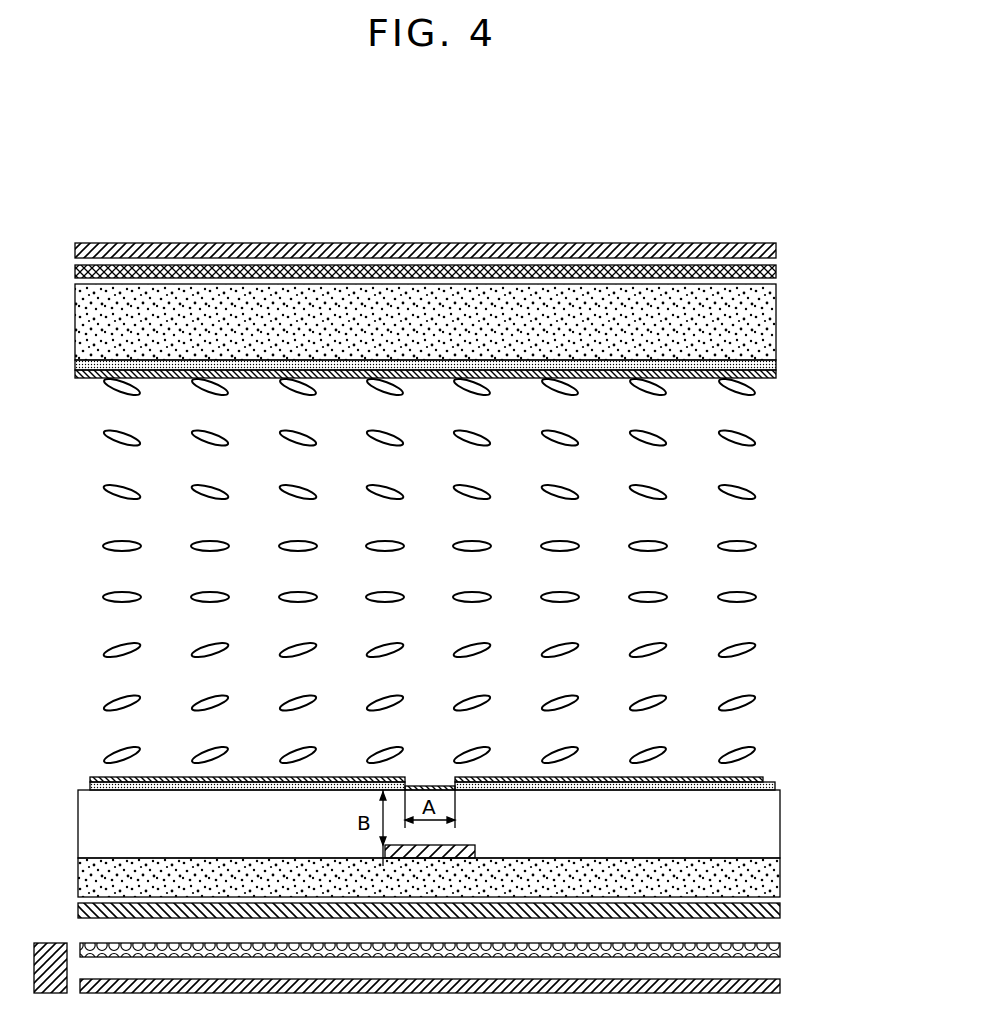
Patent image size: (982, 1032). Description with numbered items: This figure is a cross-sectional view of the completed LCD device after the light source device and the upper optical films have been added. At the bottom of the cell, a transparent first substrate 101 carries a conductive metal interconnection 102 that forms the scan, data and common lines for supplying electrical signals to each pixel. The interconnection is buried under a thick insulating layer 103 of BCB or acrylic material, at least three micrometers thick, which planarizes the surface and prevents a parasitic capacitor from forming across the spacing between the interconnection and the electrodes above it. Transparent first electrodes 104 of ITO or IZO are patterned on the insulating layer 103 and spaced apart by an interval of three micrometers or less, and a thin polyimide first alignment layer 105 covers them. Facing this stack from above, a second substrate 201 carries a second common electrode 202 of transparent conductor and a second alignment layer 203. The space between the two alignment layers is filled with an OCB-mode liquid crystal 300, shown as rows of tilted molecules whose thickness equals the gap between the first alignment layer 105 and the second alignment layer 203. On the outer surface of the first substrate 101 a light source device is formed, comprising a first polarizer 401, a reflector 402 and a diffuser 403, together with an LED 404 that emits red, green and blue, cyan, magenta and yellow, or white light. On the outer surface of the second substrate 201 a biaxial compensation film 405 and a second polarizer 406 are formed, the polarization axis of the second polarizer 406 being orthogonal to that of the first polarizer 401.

The first substrate 101 is at (776, 878).
The metal interconnection 102 is at (475, 852).
The insulating layer 103 is at (778, 823).
The first electrodes 104 is at (775, 786).
The first alignment layer 105 is at (763, 778).
The second substrate 201 is at (768, 318).
The second common electrode 202 is at (770, 366).
The second alignment layer 203 is at (766, 376).
The liquid crystal 300 is at (757, 546).
The first polarizer 401 is at (780, 911).
The reflector 402 is at (780, 950).
The diffuser 403 is at (780, 987).
The LED 404 is at (55, 994).
The biaxial compensation film 405 is at (776, 272).
The second polarizer 406 is at (776, 251).